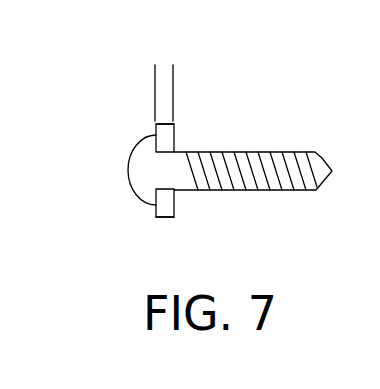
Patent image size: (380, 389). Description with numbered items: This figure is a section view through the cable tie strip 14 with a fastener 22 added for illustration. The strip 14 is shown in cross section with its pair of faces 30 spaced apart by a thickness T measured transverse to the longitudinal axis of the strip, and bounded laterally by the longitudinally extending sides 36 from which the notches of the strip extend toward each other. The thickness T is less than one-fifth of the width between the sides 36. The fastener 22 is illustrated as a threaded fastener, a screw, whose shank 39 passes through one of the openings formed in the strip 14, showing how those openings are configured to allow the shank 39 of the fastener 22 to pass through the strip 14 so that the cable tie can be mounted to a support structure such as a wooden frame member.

The thickness T is at (118, 80).
The strip 14 is at (179, 226).
The fastener 22 is at (124, 195).
The faces 30 is at (155, 140).
The longitudinally extending sides 36 is at (165, 124).
The shank 39 is at (196, 181).